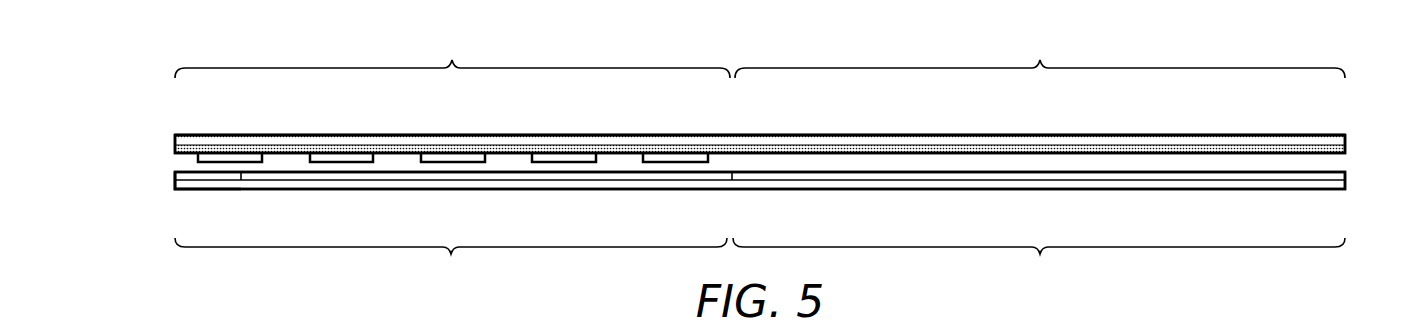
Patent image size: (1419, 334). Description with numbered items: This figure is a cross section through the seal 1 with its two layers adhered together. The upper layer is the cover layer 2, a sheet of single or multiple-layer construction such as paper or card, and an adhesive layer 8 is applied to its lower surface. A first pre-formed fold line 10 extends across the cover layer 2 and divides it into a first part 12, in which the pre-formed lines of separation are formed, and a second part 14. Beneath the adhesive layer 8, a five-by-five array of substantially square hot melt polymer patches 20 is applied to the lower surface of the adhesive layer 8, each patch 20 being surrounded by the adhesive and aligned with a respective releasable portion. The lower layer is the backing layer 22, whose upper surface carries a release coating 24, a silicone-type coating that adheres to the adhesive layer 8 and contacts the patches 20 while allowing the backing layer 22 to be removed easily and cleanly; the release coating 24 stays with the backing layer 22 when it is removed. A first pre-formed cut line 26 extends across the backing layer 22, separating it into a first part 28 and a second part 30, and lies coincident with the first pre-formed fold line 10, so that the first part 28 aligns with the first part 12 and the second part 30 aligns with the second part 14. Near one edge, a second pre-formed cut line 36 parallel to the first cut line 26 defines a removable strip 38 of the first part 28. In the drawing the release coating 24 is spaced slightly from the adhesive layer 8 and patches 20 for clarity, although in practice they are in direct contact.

The seal 1 is at (149, 48).
The cover layer 2 is at (1362, 132).
The adhesive layer 8 is at (1212, 148).
The first pre-formed fold line 10 is at (733, 134).
The first part of the cover layer 12 is at (452, 57).
The second part of the cover layer 14 is at (1040, 57).
The patches 20 is at (457, 163).
The backing layer 22 is at (1363, 191).
The release coating 24 is at (1210, 177).
The first pre-formed cut line 26 is at (735, 185).
The first part of the backing layer 28 is at (451, 260).
The second part of the backing layer 30 is at (1039, 260).
The second pre-formed cut line 36 is at (243, 185).
The removable strip 38 is at (209, 185).